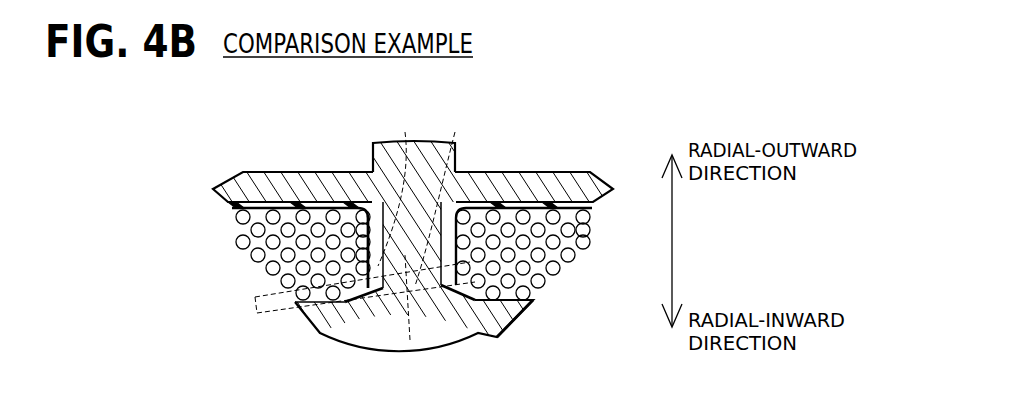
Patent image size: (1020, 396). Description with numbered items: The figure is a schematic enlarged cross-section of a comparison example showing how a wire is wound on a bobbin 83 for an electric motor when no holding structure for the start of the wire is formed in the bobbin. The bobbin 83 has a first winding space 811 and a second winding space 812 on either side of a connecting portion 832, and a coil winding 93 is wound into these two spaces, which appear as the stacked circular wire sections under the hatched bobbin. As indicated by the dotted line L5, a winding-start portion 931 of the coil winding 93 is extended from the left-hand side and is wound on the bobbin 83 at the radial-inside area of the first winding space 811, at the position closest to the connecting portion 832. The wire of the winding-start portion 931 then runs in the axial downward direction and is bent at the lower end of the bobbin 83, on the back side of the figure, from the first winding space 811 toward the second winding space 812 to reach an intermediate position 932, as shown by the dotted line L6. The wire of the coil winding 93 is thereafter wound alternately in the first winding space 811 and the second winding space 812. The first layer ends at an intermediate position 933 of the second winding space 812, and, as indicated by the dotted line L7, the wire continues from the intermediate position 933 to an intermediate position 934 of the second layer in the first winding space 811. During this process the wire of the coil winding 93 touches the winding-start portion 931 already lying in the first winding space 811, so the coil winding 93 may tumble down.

The bobbin 83 is at (241, 171).
The connecting portion 832 is at (417, 228).
The coil winding 93 is at (288, 206).
The winding-start portion 931 is at (482, 300).
The intermediate position 932 is at (362, 282).
The intermediate position 933 is at (366, 214).
The intermediate position 934 is at (506, 333).
The first winding space 811 is at (477, 212).
The second winding space 812 is at (318, 212).
The dotted line L5 is at (409, 310).
The dotted line L6 is at (398, 187).
The dotted line L7 is at (441, 198).